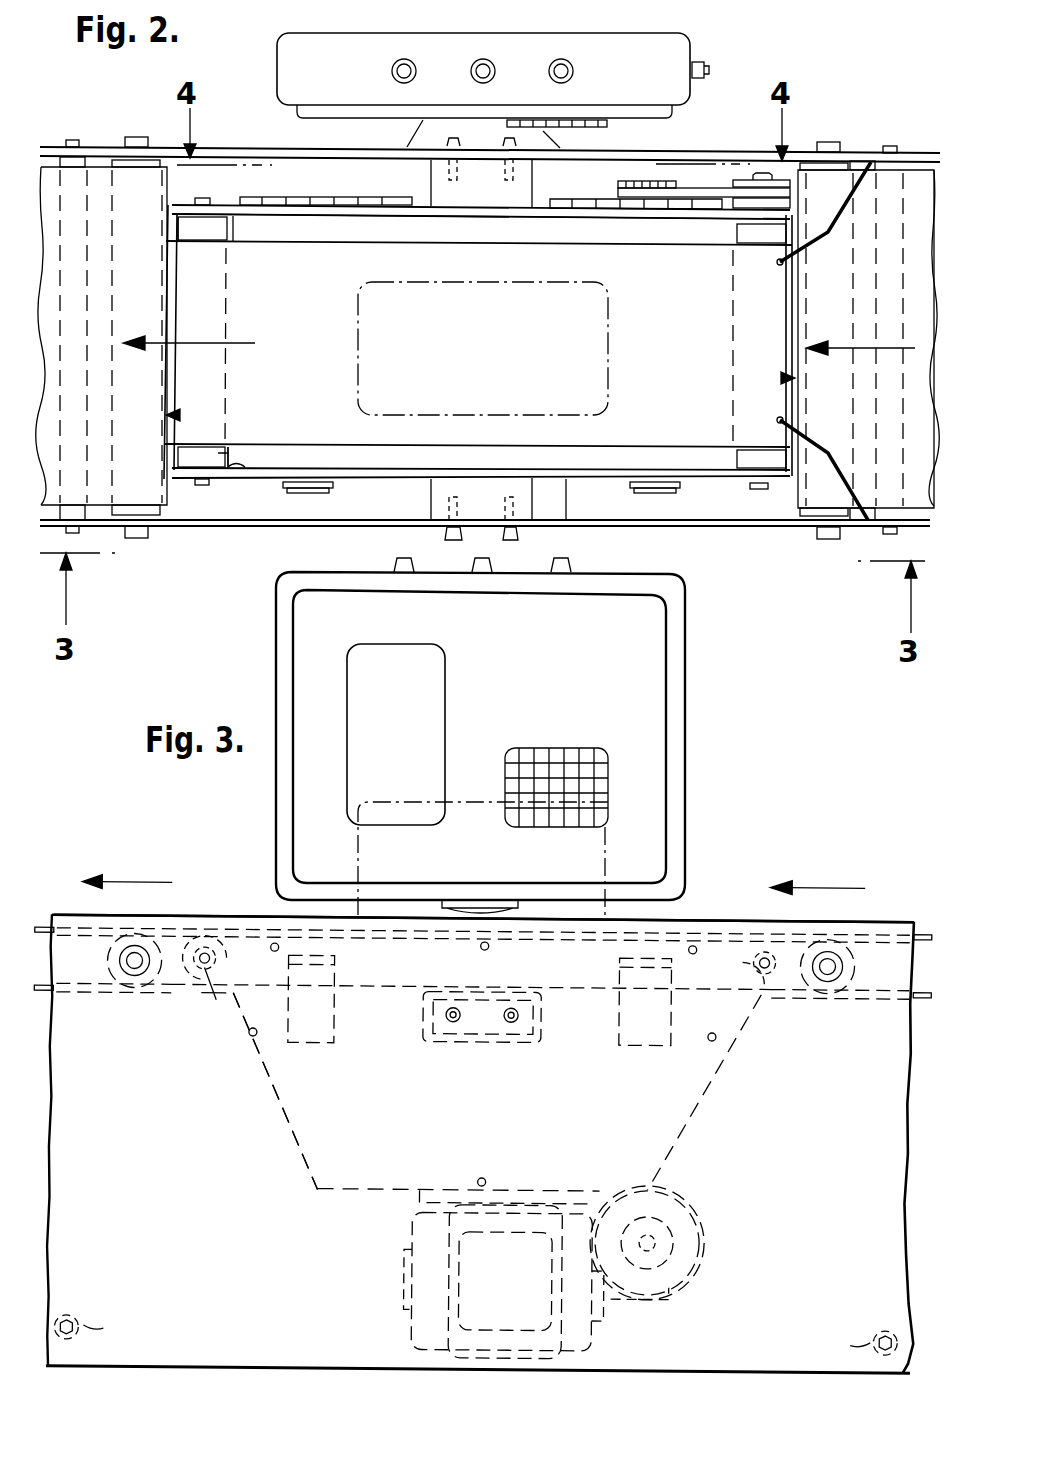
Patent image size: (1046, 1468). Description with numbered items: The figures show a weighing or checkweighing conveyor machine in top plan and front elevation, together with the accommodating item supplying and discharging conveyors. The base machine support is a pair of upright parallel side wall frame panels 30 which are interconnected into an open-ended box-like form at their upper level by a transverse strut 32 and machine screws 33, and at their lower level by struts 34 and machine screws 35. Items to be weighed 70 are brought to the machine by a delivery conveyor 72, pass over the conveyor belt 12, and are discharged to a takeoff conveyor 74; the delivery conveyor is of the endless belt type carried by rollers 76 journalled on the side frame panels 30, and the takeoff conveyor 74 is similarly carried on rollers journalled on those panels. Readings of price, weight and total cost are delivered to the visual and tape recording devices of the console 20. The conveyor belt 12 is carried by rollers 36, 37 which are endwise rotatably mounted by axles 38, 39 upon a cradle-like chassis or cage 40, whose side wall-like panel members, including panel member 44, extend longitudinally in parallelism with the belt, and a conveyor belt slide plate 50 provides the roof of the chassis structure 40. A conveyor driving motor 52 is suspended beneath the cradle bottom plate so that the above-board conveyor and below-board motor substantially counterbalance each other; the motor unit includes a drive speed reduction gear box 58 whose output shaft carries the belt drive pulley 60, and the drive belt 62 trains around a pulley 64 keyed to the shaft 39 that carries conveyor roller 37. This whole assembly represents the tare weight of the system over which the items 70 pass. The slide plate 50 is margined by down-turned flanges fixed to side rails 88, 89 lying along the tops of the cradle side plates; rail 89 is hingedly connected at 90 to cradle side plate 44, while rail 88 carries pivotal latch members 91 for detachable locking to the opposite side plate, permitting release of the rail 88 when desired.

In FIG. 2, the conveyor belt 12 is at (670, 363).
In FIG. 3, the conveyor belt 12 is at (702, 936).
In FIG. 2, the console 20 is at (690, 41).
In FIG. 3, the console 20 is at (688, 733).
In FIG. 2, the side wall frame panel 30 is at (864, 150).
In FIG. 3, the side wall frame panel 30 is at (808, 1151).
In FIG. 2, the transverse strut 32 is at (432, 490).
In FIG. 3, the transverse strut 32 is at (427, 1011).
In FIG. 2, the machine screws 33 is at (510, 139).
In FIG. 3, the machine screws 33 is at (456, 1022).
In FIG. 2, the struts 34 is at (90, 267).
In FIG. 3, the struts 34 is at (84, 1329).
In FIG. 2, the machine screws 35 is at (74, 139).
In FIG. 3, the machine screws 35 is at (72, 1323).
In FIG. 2, the conveyor roller 36 is at (244, 470).
In FIG. 2, the conveyor roller 37 is at (732, 458).
In FIG. 2, the axle 38 is at (203, 196).
In FIG. 3, the axle 38 is at (203, 972).
In FIG. 2, the axle 39 is at (758, 170).
In FIG. 3, the axle 39 is at (762, 988).
In FIG. 2, the cage 40 is at (566, 486).
In FIG. 3, the cage 40 is at (295, 1155).
In FIG. 3, the side wall panel member 44 is at (262, 1102).
In FIG. 2, the conveyor belt slide plate 50 is at (334, 222).
In FIG. 3, the conveyor belt slide plate 50 is at (240, 938).
In FIG. 3, the conveyor driving motor 52 is at (406, 1267).
In FIG. 3, the drive speed reduction gear box 58 is at (703, 1234).
In FIG. 2, the belt drive pulley 60 is at (618, 182).
In FIG. 2, the drive belt 62 is at (692, 196).
In FIG. 2, the pulley 64 is at (740, 177).
In FIG. 2, the items to be weighed 70 is at (356, 352).
In FIG. 2, the delivery conveyor 72 is at (778, 378).
In FIG. 3, the delivery conveyor 72 is at (888, 914).
In FIG. 2, the takeoff conveyor 74 is at (182, 416).
In FIG. 3, the takeoff conveyor 74 is at (66, 917).
In FIG. 2, the rollers 76 is at (846, 526).
In FIG. 2, the side rail 88 is at (256, 208).
In FIG. 2, the side rail 89 is at (276, 468).
In FIG. 3, the side rail 89 is at (215, 1020).
In FIG. 2, the hinge connection 90 is at (318, 196).
In FIG. 2, the pivotal latch members 91 is at (282, 492).
In FIG. 3, the pivotal latch members 91 is at (298, 1044).